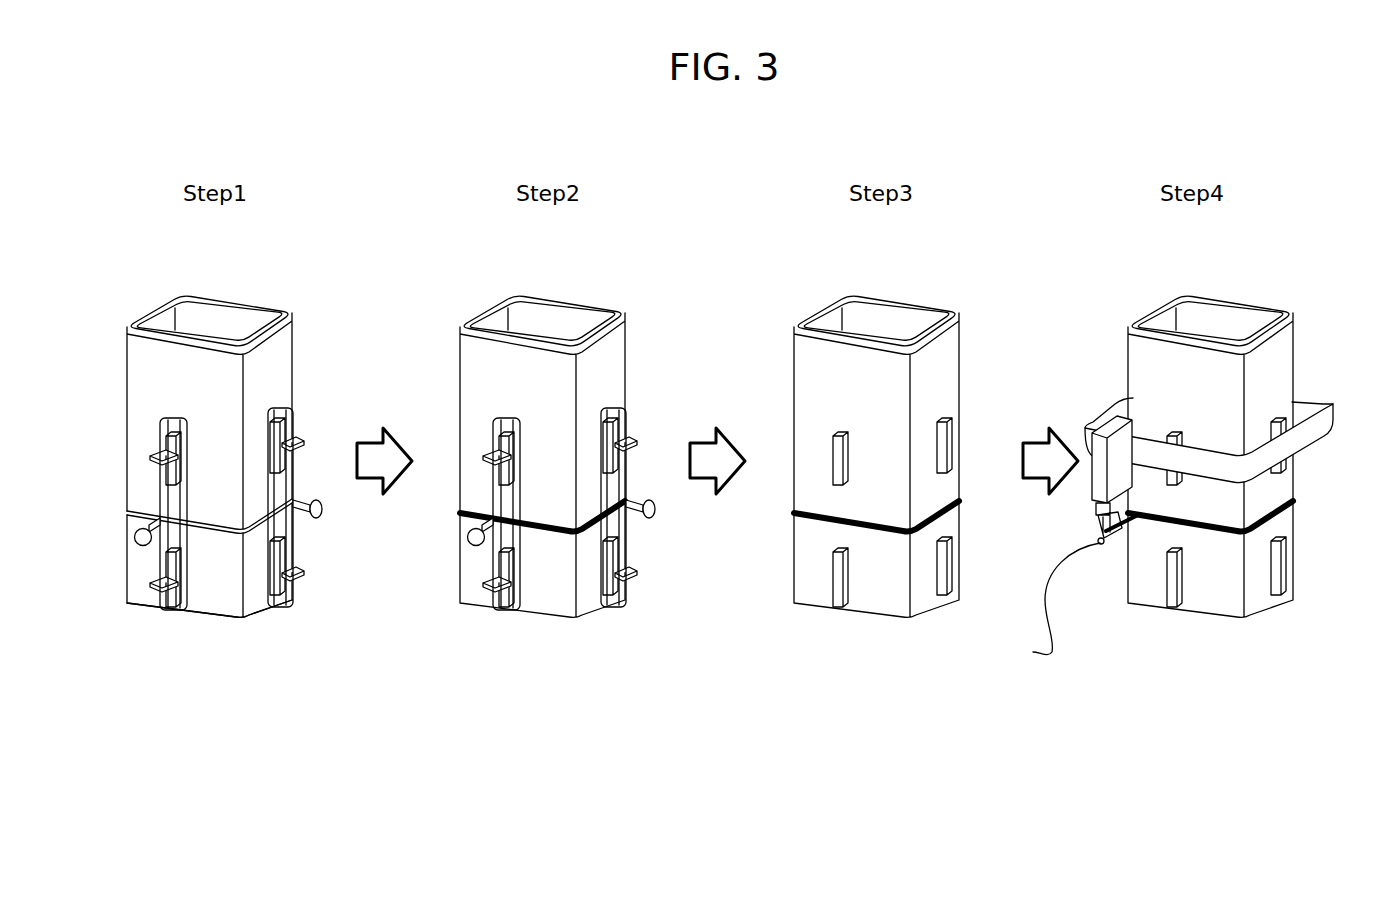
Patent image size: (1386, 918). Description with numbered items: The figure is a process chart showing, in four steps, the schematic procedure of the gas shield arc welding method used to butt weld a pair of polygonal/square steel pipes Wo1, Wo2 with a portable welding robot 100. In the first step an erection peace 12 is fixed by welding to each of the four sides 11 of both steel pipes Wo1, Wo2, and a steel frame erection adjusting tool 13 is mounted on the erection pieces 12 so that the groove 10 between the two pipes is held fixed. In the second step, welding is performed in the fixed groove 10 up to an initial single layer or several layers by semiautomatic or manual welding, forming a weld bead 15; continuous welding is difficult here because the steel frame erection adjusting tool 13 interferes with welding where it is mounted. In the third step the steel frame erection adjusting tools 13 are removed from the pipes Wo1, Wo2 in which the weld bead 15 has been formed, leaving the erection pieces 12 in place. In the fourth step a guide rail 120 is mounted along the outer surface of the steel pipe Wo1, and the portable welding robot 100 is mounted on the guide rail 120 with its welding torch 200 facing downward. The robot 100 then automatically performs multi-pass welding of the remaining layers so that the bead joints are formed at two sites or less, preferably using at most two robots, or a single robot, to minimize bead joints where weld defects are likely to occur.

The groove 10 is at (223, 532).
The sides 11 is at (152, 306).
The erection peace 12 is at (168, 442).
The steel frame erection adjusting tool 13 is at (160, 490).
The weld bead 15 is at (565, 535).
The portable welding robot 100 is at (1086, 484).
The guide rail 120 is at (1312, 442).
The welding torch 200 is at (1137, 525).
The polygonal/square steel pipe Wo1 is at (248, 303).
The polygonal/square steel pipe Wo2 is at (228, 622).